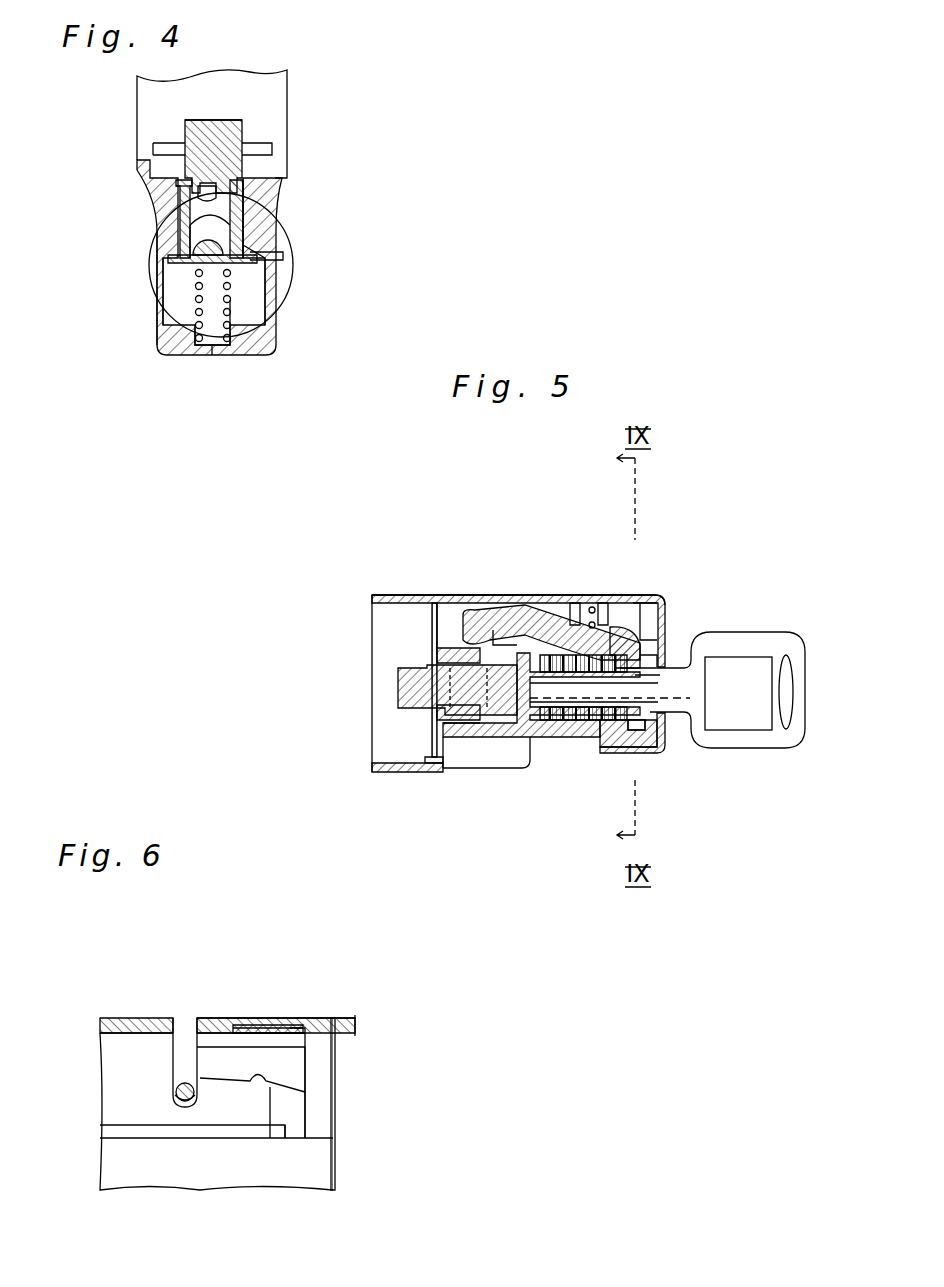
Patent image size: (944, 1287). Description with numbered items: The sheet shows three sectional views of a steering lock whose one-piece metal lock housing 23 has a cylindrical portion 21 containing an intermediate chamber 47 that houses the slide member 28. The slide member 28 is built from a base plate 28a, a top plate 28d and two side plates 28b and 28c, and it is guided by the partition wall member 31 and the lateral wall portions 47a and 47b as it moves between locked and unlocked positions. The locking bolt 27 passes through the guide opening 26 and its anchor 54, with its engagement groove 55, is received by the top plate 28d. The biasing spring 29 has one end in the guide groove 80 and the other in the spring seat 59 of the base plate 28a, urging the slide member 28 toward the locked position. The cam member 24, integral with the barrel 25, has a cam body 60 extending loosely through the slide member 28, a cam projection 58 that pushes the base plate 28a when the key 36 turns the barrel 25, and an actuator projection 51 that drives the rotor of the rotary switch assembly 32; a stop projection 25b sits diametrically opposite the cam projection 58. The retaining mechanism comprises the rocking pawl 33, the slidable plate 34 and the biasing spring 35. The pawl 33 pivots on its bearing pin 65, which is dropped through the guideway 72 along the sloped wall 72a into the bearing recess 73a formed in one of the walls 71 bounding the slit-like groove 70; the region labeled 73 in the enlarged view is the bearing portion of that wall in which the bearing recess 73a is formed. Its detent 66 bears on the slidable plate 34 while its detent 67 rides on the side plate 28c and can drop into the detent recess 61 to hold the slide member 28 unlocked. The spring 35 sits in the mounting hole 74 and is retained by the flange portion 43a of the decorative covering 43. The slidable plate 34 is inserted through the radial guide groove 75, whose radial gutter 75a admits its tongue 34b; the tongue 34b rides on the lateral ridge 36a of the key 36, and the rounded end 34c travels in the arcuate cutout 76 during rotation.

In FIG. 5, the cylindrical portion 21 is at (478, 610).
In FIG. 6, the cylindrical portion 21 is at (128, 1020).
In FIG. 6, the lock housing 23 is at (336, 1093).
In FIG. 5, the cam member 24 is at (500, 737).
In FIG. 5, the barrel 25 is at (542, 740).
In FIG. 4, the stop projection 25b is at (210, 293).
In FIG. 4, the guide opening 26 is at (268, 150).
In FIG. 4, the locking bolt 27 is at (207, 125).
In FIG. 4, the slide member 28 is at (175, 245).
In FIG. 5, the slide member 28 is at (450, 720).
In FIG. 4, the base plate 28a is at (232, 307).
In FIG. 4, the side plate 28b is at (186, 235).
In FIG. 4, the side plate 28c is at (250, 255).
In FIG. 4, the top plate 28d is at (190, 183).
In FIG. 4, the biasing spring 29 is at (247, 317).
In FIG. 5, the partition wall member 31 is at (460, 635).
In FIG. 5, the rotary switch assembly 32 is at (432, 608).
In FIG. 4, the rocking pawl 33 is at (272, 256).
In FIG. 5, the rocking pawl 33 is at (545, 617).
In FIG. 5, the slidable plate 34 is at (620, 723).
In FIG. 5, the tongue 34b is at (662, 693).
In FIG. 5, the rounded end 34c is at (640, 733).
In FIG. 5, the biasing spring 35 is at (605, 600).
In FIG. 5, the key 36 is at (757, 690).
In FIG. 5, the lateral ridge 36a is at (657, 668).
In FIG. 5, the decorative covering 43 is at (650, 590).
In FIG. 6, the decorative covering 43 is at (323, 1017).
In FIG. 5, the flange portion 43a is at (620, 605).
In FIG. 6, the flange portion 43a is at (253, 1020).
In FIG. 4, the intermediate chamber 47 is at (173, 297).
In FIG. 4, the lateral wall portion 47a is at (253, 208).
In FIG. 4, the lateral wall portion 47b is at (178, 212).
In FIG. 5, the actuator projection 51 is at (398, 684).
In FIG. 4, the anchor 54 is at (190, 205).
In FIG. 4, the engagement groove 55 is at (227, 160).
In FIG. 4, the cam projection 58 is at (183, 262).
In FIG. 5, the cam projection 58 is at (465, 740).
In FIG. 4, the spring seat 59 is at (197, 273).
In FIG. 4, the cam body 60 is at (215, 248).
In FIG. 4, the detent recess 61 is at (245, 200).
In FIG. 6, the bearing pin 65 is at (173, 1093).
In FIG. 5, the detent 66 is at (643, 638).
In FIG. 5, the detent 67 is at (437, 608).
In FIG. 6, the slit-like groove 70 is at (292, 1113).
In FIG. 6, the opposite walls 71 is at (220, 1102).
In FIG. 6, the guideway 72 is at (292, 1057).
In FIG. 6, the sloped wall 72a is at (267, 1078).
In FIG. 5, the pin 73 is at (580, 610).
In FIG. 6, the pin 73 is at (185, 1035).
In FIG. 6, the bearing recess 73a is at (183, 1102).
In FIG. 5, the mounting hole 74 is at (575, 607).
In FIG. 6, the mounting hole 74 is at (270, 1025).
In FIG. 6, the radial guide groove 75 is at (317, 1073).
In FIG. 6, the radial gutter 75a is at (300, 1027).
In FIG. 5, the arcuate cutout 76 is at (600, 720).
In FIG. 4, the guide groove 80 is at (218, 343).